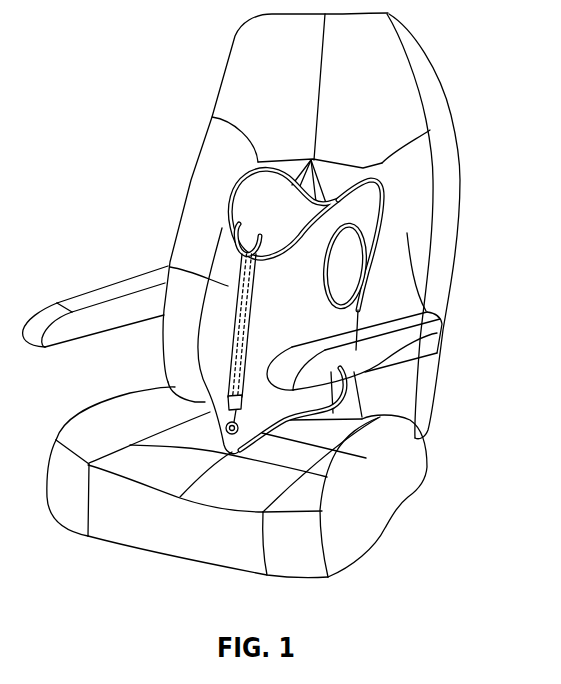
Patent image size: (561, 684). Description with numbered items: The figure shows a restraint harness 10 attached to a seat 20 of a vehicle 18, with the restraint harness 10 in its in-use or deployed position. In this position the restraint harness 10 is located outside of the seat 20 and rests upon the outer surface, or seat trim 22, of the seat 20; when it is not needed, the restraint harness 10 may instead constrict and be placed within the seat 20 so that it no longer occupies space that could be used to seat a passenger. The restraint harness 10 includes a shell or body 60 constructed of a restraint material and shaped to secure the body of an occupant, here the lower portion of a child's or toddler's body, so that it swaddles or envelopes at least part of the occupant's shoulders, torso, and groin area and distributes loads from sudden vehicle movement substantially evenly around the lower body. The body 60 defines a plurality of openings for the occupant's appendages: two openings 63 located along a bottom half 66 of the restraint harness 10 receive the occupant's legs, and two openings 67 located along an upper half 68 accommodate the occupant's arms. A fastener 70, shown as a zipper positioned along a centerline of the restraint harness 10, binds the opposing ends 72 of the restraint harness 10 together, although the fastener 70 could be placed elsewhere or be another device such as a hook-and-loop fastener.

The restraint harness 10 is at (406, 232).
The vehicle 18 is at (188, 69).
The seat 20 is at (373, 51).
The seat trim 22 is at (170, 480).
The body 60 is at (284, 345).
The openings 63 is at (184, 403).
The bottom half 66 is at (440, 333).
The openings 67 is at (213, 242).
The upper half 68 is at (354, 181).
The fastener 70 is at (232, 338).
The opposing ends 72 is at (170, 267).